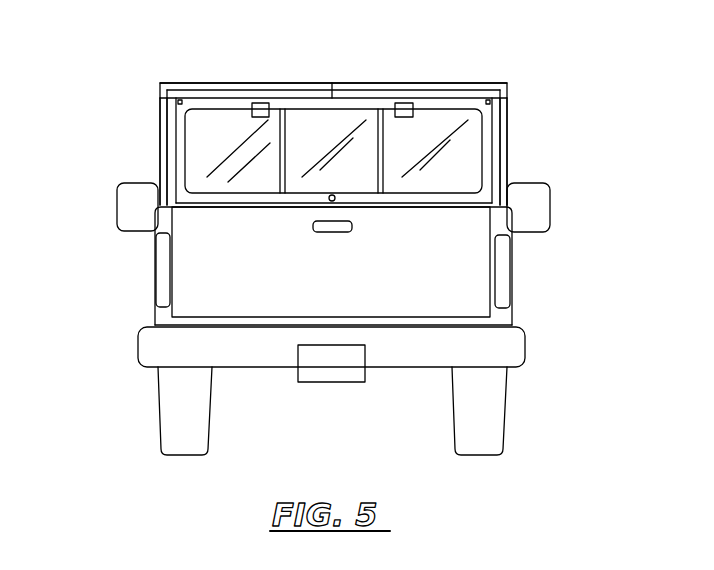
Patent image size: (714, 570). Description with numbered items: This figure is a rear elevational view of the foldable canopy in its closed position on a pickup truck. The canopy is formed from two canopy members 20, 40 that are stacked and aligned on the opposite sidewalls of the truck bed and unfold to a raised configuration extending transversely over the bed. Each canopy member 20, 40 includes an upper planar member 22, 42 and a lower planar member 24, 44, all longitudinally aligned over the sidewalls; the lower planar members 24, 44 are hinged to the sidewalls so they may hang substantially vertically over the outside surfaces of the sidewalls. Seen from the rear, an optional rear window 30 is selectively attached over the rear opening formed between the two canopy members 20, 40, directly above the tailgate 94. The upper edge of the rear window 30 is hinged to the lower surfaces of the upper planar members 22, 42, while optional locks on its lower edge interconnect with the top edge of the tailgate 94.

The canopy member 20 is at (147, 104).
The upper planar member 22 is at (278, 84).
The lower planar member 24 is at (163, 137).
The rear window 30 is at (326, 144).
The canopy member 40 is at (520, 103).
The upper planar member 42 is at (382, 84).
The lower planar member 44 is at (508, 139).
The tailgate 94 is at (347, 286).